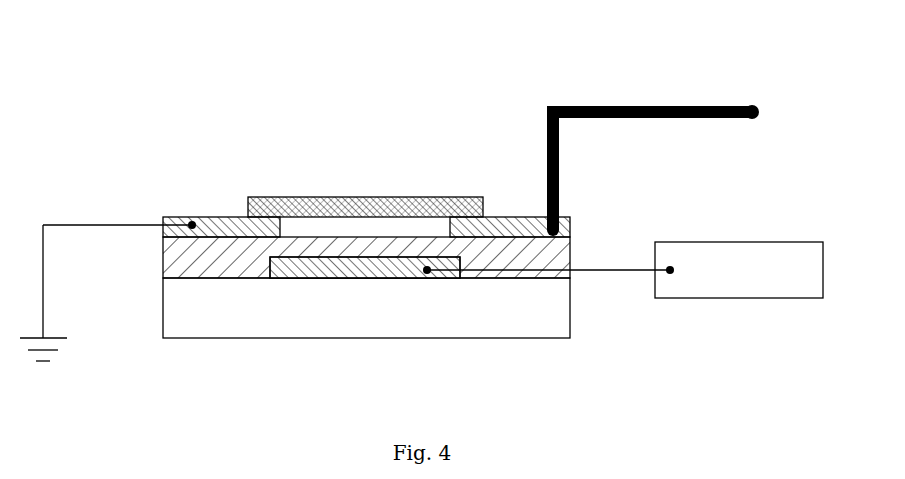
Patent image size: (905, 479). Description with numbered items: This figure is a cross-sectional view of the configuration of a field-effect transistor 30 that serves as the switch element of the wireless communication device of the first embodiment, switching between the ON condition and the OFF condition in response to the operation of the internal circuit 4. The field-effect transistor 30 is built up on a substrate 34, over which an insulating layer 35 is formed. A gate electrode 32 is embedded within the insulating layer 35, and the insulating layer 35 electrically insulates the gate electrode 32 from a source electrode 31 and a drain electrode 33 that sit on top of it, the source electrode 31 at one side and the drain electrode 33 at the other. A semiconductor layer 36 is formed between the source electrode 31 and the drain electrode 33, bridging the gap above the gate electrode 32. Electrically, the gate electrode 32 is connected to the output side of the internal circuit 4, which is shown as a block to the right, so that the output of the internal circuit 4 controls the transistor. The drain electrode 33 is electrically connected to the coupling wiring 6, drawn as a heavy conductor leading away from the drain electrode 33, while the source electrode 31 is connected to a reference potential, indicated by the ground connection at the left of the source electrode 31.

The field-effect transistor 30 is at (385, 32).
The source electrode 31 is at (232, 216).
The gate electrode 32 is at (347, 275).
The drain electrode 33 is at (503, 216).
The substrate 34 is at (175, 306).
The insulating layer 35 is at (163, 252).
The semiconductor layer 36 is at (378, 206).
The coupling wiring 6 is at (668, 106).
The internal circuit 4 is at (786, 242).